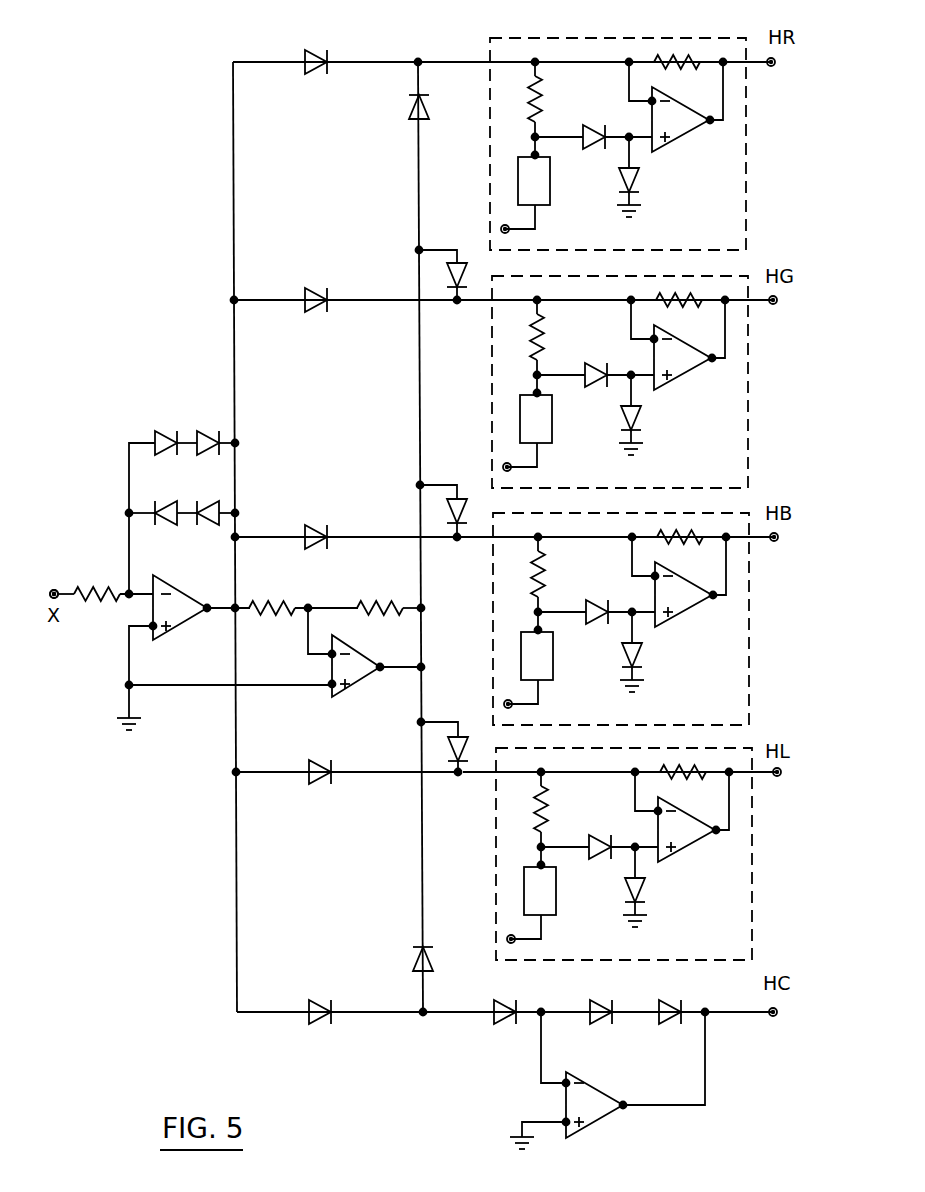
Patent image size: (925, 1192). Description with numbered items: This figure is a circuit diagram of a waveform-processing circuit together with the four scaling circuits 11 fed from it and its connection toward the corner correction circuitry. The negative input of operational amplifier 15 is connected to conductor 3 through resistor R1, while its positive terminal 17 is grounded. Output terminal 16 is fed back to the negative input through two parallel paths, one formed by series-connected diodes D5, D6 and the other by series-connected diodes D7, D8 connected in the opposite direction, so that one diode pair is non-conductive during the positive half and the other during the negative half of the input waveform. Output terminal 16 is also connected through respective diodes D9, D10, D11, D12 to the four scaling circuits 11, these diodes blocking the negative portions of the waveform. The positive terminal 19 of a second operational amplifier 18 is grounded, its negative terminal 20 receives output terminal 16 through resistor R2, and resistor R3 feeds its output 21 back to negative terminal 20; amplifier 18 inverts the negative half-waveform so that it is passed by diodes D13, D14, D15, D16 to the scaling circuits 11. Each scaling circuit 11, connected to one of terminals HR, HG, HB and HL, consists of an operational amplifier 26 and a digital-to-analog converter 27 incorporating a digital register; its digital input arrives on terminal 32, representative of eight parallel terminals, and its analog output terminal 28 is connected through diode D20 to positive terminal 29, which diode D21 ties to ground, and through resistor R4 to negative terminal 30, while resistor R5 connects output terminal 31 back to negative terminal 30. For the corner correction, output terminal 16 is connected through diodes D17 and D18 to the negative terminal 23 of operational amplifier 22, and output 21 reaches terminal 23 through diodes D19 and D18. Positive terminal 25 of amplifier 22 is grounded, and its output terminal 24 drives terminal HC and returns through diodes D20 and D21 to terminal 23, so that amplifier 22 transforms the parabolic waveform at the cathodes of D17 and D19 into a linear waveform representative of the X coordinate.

The conductor 3 is at (60, 592).
The resistor R1 is at (113, 580).
The operational amplifier 15 is at (182, 630).
The output terminal 16 is at (221, 592).
The positive terminal 17 is at (153, 632).
The diode D5 is at (176, 502).
The diode D6 is at (216, 502).
The diode D7 is at (176, 432).
The diode D8 is at (216, 432).
The resistor R2 is at (303, 594).
The resistor R3 is at (389, 594).
The operational amplifier 18 is at (392, 650).
The positive terminal 19 is at (331, 688).
The negative terminal 20 is at (331, 651).
The output 21 is at (360, 684).
The diode D9 is at (318, 52).
The diode D10 is at (322, 290).
The diode D11 is at (322, 527).
The diode D12 is at (324, 762).
The diode D13 is at (400, 107).
The diode D14 is at (450, 266).
The diode D15 is at (449, 500).
The diode D16 is at (452, 737).
The diode D17 is at (321, 1002).
The diode D18 is at (510, 1002).
The diode D19 is at (403, 960).
The diode D20 is at (615, 562).
The diode D21 is at (636, 580).
The scaling circuit 11 is at (746, 166).
The resistor R4 is at (550, 109).
The resistor R5 is at (677, 49).
The operational amplifier 26 is at (690, 141).
The digital-to-analog converter 27 is at (546, 193).
The analog output terminal 28 is at (531, 155).
The positive terminal 29 is at (650, 134).
The negative terminal 30 is at (650, 99).
The output terminal 31 is at (712, 118).
The terminal 32 is at (490, 214).
The operational amplifier 22 is at (598, 1127).
The negative terminal 23 is at (563, 1080).
The output terminal 24 is at (626, 1102).
The positive terminal 25 is at (562, 1120).